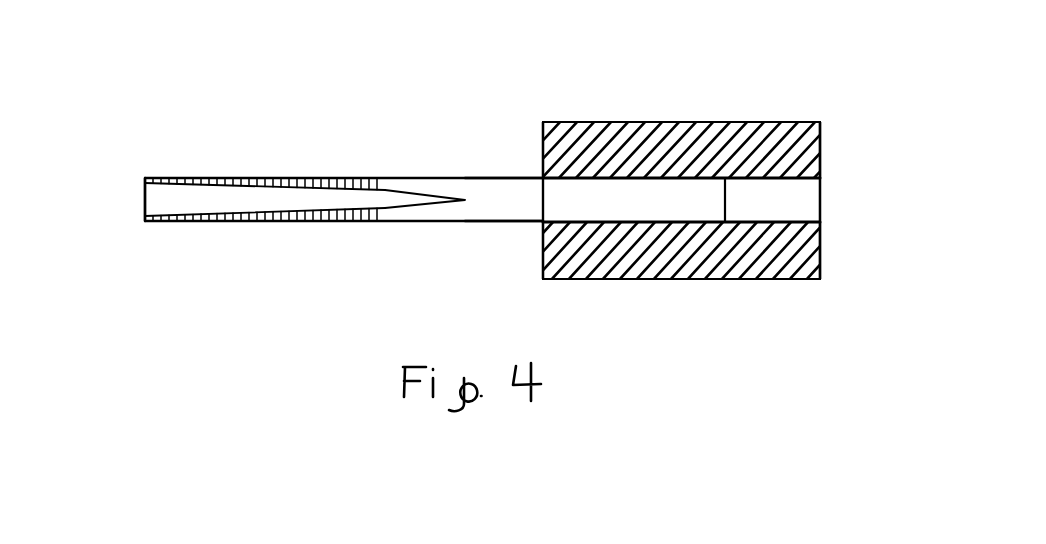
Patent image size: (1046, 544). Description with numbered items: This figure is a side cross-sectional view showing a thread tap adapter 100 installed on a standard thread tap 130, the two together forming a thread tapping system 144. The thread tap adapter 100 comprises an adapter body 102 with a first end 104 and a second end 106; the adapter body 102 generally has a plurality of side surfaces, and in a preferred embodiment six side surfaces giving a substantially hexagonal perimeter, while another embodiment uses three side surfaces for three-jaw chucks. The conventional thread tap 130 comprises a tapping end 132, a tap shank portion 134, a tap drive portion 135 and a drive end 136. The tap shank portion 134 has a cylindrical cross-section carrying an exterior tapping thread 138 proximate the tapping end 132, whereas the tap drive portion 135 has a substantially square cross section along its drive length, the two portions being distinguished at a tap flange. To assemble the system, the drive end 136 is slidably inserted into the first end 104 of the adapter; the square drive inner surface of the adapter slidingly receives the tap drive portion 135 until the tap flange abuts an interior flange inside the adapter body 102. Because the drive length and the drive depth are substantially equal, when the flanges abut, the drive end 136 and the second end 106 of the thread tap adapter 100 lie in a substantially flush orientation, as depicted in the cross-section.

The thread tap adapter 100 is at (753, 280).
The adapter body 102 is at (722, 122).
The first end 104 is at (545, 257).
The second end 106 is at (820, 258).
The thread tap 130 is at (393, 223).
The tapping end 132 is at (145, 201).
The tap shank portion 134 is at (474, 180).
The tap drive portion 135 is at (783, 202).
The drive end 136 is at (820, 200).
The exterior tapping thread 138 is at (197, 178).
The thread tapping system 144 is at (628, 96).